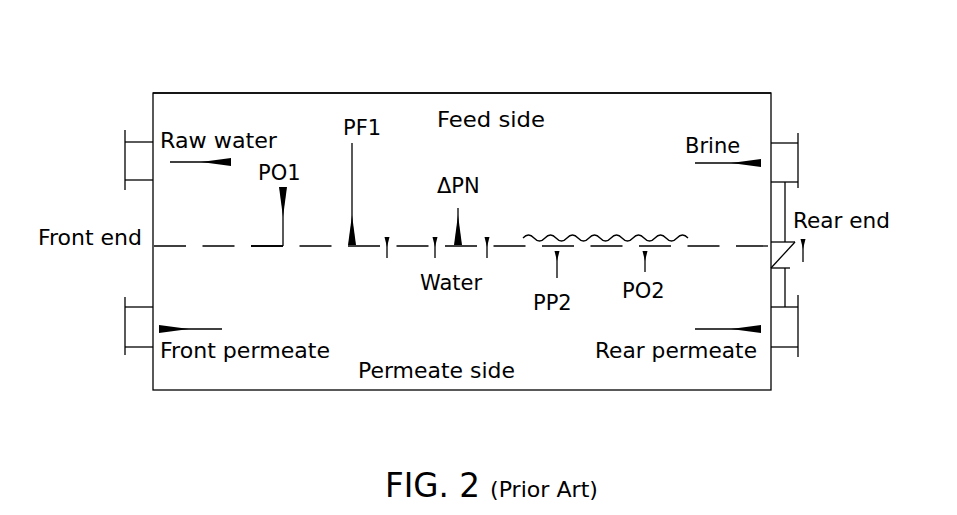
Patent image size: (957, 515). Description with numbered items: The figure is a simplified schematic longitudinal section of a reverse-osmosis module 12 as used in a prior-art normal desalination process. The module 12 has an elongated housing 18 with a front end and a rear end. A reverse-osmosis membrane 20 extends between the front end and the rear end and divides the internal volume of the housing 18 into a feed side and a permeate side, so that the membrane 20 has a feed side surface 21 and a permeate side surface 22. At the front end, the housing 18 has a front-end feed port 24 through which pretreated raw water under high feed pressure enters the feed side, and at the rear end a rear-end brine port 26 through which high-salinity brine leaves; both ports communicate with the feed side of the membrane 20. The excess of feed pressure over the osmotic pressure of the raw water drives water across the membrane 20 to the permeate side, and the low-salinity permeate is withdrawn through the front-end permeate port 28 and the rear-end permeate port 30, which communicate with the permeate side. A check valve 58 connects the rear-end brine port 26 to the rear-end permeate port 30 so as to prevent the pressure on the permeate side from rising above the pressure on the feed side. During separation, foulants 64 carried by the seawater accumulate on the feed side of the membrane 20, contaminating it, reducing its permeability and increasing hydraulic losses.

The RO module 12 is at (560, 66).
The elongated housing 18 is at (232, 93).
The RO membrane 20 is at (708, 245).
The feed side surface 21 is at (254, 237).
The permeate side surface 22 is at (257, 256).
The front-end feed port 24 is at (115, 170).
The rear-end brine port 26 is at (800, 165).
The front-end permeate port 28 is at (115, 334).
The rear-end permeate port 30 is at (800, 328).
The check valve 58 is at (790, 268).
The foulants 64 is at (607, 233).